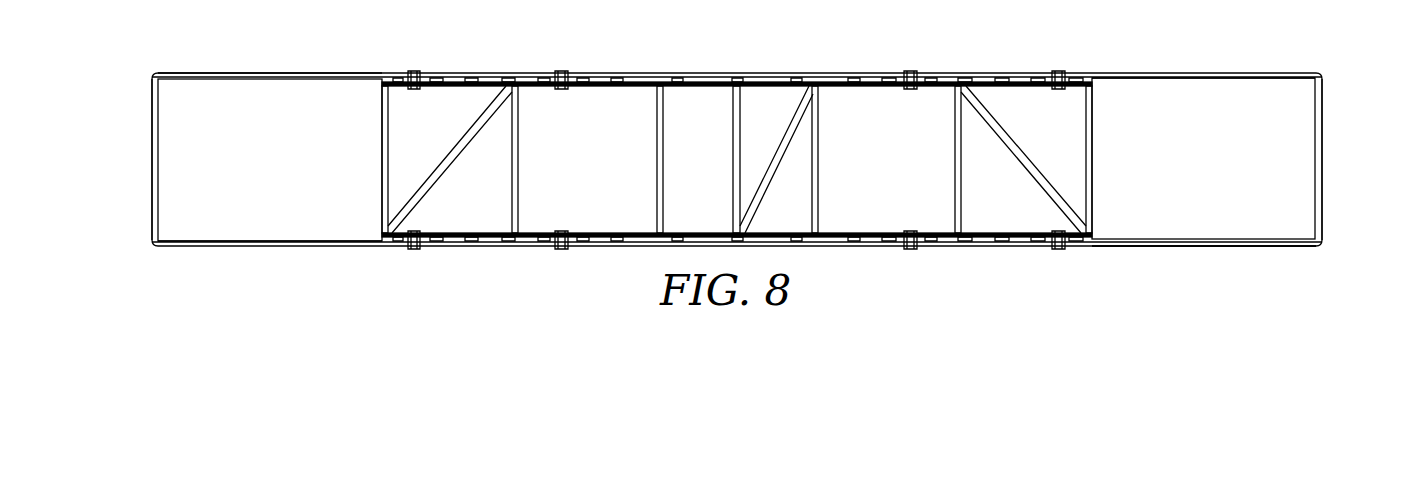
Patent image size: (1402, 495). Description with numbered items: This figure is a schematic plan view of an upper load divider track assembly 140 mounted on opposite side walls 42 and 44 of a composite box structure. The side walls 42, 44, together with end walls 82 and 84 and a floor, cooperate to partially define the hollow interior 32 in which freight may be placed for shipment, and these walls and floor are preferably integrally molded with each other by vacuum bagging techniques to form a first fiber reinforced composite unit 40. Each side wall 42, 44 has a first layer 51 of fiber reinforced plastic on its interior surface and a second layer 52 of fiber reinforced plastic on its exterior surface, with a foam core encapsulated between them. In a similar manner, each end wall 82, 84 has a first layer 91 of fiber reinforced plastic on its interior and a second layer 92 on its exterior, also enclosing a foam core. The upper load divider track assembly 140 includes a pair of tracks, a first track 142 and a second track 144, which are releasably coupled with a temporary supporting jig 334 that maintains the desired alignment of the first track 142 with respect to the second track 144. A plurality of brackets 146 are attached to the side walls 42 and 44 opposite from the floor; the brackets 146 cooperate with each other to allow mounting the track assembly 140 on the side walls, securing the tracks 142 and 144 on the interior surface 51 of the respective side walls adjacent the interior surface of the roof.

The first fiber reinforced composite unit 40 is at (1195, 70).
The side wall 42 is at (1218, 250).
The side wall 44 is at (207, 70).
The first layer of fiber reinforced plastic 51 is at (322, 241).
The second layer of fiber reinforced plastic 52 is at (278, 73).
The hollow interior 32 is at (288, 164).
The end wall 82 is at (1324, 168).
The end wall 84 is at (150, 188).
The first layer of fiber reinforced plastic 91 is at (158, 140).
The second layer of fiber reinforced plastic 92 is at (152, 125).
The upper load divider track assembly 140 is at (772, 163).
The first track 142 is at (945, 240).
The second track 144 is at (640, 75).
The bracket 146 is at (915, 71).
The temporary supporting jig 334 is at (388, 105).